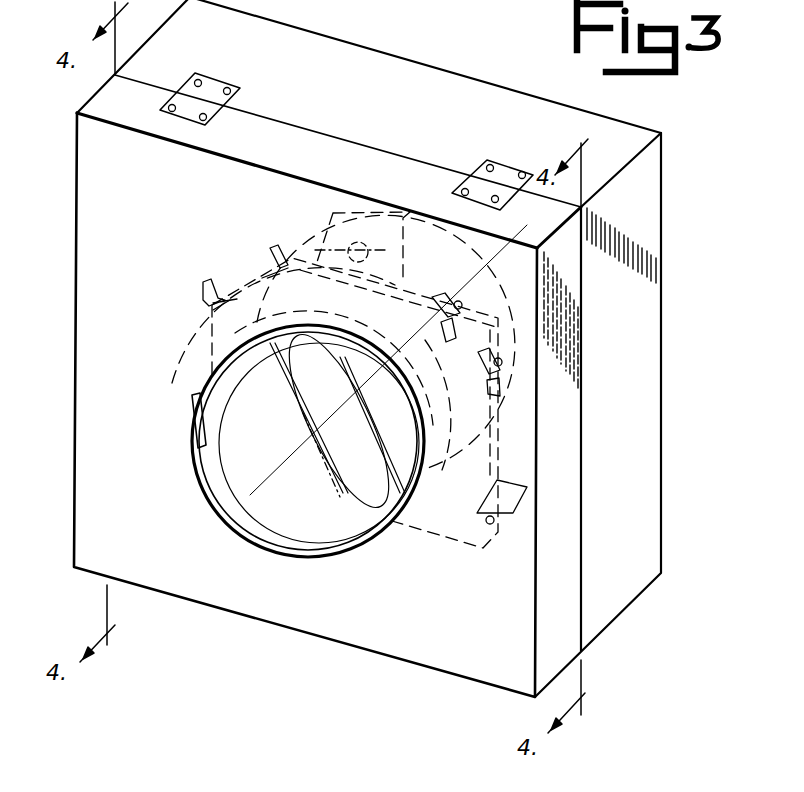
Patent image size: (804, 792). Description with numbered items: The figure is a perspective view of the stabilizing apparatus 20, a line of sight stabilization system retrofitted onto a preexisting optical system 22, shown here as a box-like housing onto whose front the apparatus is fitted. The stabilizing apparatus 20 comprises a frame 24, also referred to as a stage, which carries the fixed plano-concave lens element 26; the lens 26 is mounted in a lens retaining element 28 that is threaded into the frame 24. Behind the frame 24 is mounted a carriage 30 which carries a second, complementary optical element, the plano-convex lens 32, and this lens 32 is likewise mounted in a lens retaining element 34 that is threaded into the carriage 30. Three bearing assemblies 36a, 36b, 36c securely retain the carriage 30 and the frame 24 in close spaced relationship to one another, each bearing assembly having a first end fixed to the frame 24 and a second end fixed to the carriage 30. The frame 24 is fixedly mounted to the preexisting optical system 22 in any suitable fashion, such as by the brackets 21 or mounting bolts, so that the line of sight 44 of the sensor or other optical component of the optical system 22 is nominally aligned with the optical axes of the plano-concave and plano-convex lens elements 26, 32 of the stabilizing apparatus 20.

The stabilizing apparatus 20 is at (60, 285).
The brackets 21 is at (230, 68).
The preexisting optical system 22 is at (480, 100).
The frame 24 is at (583, 443).
The plano-concave lens element 26 is at (330, 536).
The lens retaining element 28 is at (368, 544).
The carriage 30 is at (450, 536).
The plano-convex lens 32 is at (432, 455).
The lens retaining element 34 is at (434, 456).
The bearing assembly 36a is at (490, 527).
The bearing assembly 36b is at (313, 244).
The bearing assembly 36c is at (200, 464).
The line of sight 44 is at (221, 530).